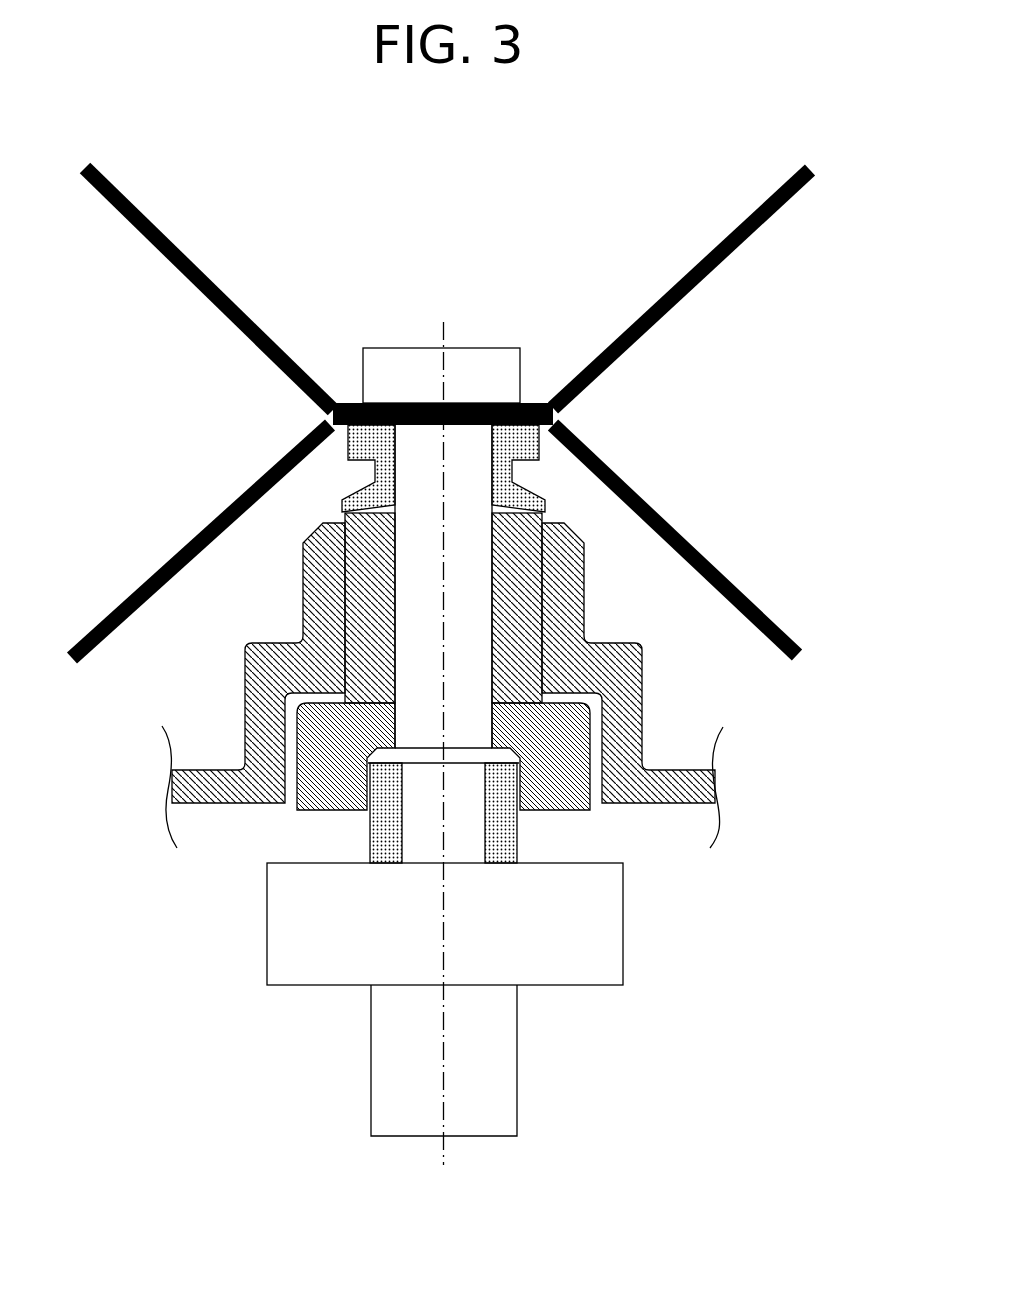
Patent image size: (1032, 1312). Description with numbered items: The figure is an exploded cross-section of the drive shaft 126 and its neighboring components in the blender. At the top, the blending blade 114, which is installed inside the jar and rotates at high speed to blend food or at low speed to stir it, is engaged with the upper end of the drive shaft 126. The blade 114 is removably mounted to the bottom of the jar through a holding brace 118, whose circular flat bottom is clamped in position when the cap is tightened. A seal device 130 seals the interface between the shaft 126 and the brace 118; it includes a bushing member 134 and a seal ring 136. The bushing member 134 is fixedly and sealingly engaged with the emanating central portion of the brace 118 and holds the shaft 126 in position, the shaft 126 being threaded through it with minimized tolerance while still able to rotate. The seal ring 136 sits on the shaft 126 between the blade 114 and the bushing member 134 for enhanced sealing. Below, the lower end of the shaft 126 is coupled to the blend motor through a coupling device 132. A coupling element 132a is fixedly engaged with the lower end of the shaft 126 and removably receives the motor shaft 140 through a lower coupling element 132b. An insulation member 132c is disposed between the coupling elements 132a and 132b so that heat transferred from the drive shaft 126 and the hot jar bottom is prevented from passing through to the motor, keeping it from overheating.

The blending blade 114 is at (665, 517).
The holding brace 118 is at (707, 787).
The drive shaft 126 is at (477, 367).
The seal device 130 is at (262, 522).
The coupling device 132 is at (200, 882).
The coupling element 132a is at (583, 800).
The lower coupling element 132b is at (278, 957).
The insulation member 132c is at (498, 850).
The bushing member 134 is at (372, 583).
The seal ring 136 is at (358, 492).
The motor shaft 140 is at (502, 1025).